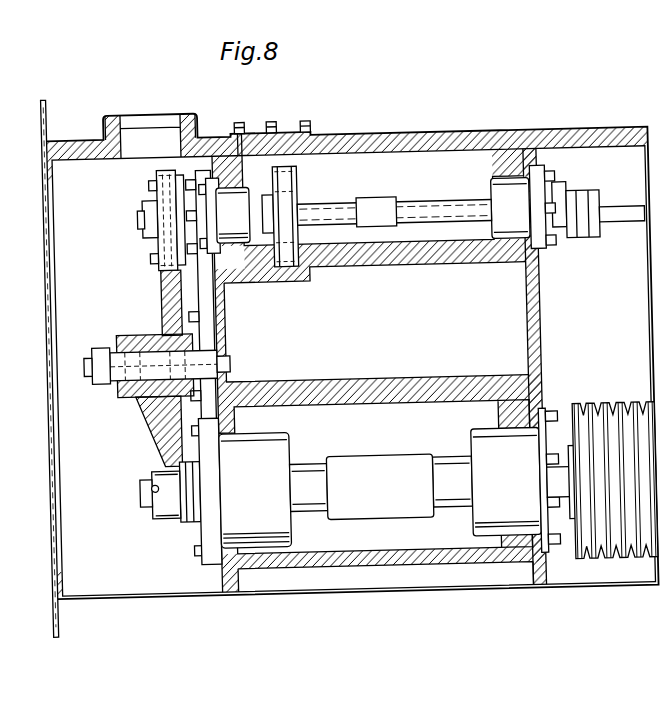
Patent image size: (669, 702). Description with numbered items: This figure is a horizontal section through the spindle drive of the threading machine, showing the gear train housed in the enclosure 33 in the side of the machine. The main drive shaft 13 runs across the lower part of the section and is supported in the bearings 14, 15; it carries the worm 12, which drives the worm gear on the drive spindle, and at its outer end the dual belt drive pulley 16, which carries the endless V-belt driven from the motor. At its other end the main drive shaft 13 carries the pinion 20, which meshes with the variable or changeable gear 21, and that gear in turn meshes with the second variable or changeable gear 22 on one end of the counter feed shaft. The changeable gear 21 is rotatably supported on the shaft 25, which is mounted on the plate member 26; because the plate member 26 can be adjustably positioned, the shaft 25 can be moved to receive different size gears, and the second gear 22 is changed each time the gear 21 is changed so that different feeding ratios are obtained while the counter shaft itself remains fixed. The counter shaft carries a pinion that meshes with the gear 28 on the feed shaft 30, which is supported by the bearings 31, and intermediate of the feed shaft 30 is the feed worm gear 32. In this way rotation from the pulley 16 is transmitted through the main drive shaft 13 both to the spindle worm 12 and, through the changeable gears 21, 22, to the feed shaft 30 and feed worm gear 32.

The worm 12 is at (405, 508).
The main drive shaft 13 is at (141, 500).
The bearing 14 is at (270, 492).
The bearing 15 is at (525, 480).
The dual belt drive pulley 16 is at (610, 408).
The pinion 20 is at (169, 501).
The variable or changeable gear 21 is at (151, 412).
The second variable or changeable gear 22 is at (166, 188).
The shaft 25 is at (99, 372).
The plate member 26 is at (214, 310).
The gear 28 is at (290, 188).
The feed shaft 30 is at (450, 212).
The bearings 31 is at (377, 211).
The feed worm gear 32 is at (388, 219).
The enclosure 33 is at (51, 303).